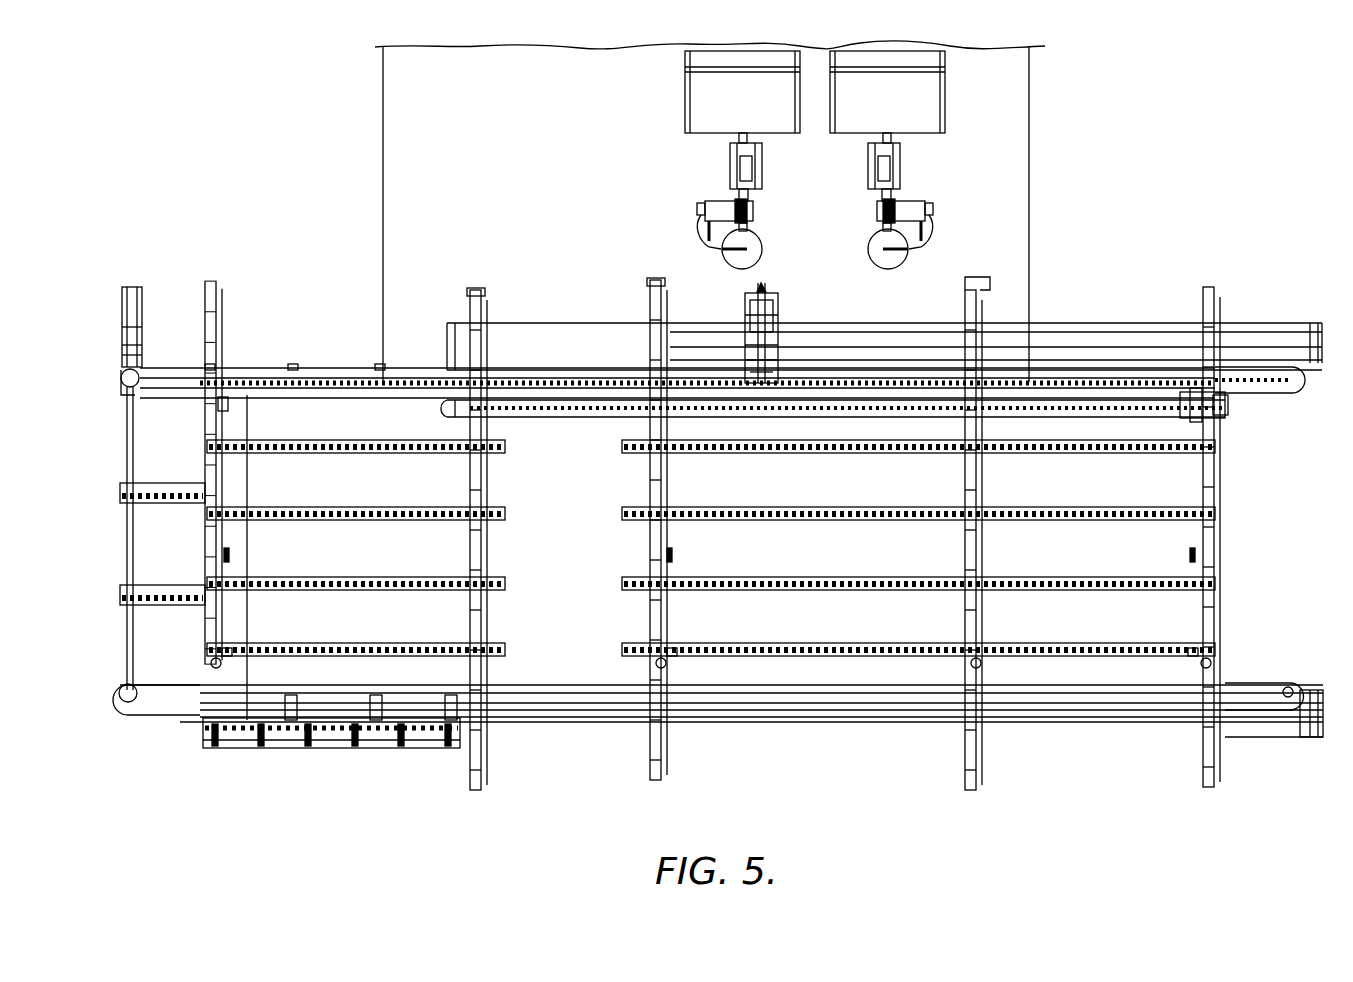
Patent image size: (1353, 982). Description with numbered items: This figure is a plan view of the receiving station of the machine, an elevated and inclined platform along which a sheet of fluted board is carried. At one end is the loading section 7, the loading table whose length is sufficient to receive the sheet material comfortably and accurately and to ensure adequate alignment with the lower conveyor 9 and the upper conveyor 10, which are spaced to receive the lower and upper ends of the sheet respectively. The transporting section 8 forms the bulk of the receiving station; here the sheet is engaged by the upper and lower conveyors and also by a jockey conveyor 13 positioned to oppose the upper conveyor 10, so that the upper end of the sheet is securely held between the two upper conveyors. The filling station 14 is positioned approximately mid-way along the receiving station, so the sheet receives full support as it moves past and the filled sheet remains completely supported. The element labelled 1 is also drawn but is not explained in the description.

The frame post 1 is at (248, 470).
The shelf assembly 7 is at (290, 543).
The upper beam rail 8 is at (843, 440).
The lower rail 9 is at (158, 712).
The top rail tube 10 is at (160, 372).
The coupling fitting 13 is at (1224, 400).
The actuator 14 is at (770, 283).